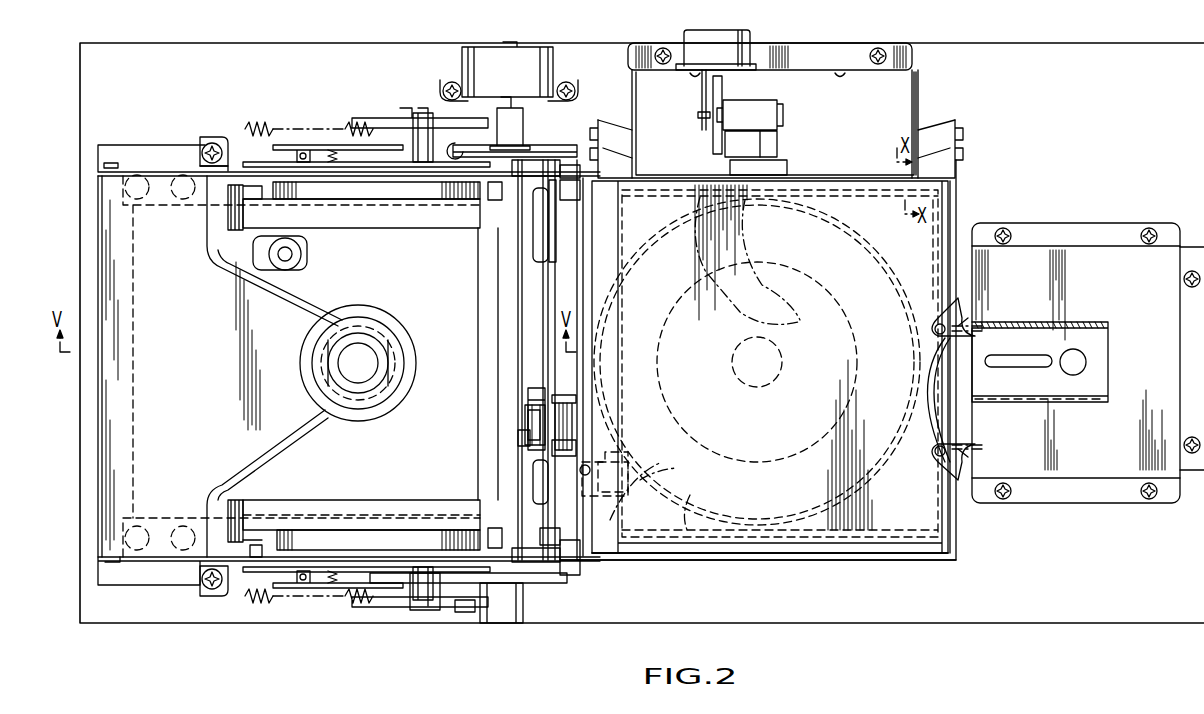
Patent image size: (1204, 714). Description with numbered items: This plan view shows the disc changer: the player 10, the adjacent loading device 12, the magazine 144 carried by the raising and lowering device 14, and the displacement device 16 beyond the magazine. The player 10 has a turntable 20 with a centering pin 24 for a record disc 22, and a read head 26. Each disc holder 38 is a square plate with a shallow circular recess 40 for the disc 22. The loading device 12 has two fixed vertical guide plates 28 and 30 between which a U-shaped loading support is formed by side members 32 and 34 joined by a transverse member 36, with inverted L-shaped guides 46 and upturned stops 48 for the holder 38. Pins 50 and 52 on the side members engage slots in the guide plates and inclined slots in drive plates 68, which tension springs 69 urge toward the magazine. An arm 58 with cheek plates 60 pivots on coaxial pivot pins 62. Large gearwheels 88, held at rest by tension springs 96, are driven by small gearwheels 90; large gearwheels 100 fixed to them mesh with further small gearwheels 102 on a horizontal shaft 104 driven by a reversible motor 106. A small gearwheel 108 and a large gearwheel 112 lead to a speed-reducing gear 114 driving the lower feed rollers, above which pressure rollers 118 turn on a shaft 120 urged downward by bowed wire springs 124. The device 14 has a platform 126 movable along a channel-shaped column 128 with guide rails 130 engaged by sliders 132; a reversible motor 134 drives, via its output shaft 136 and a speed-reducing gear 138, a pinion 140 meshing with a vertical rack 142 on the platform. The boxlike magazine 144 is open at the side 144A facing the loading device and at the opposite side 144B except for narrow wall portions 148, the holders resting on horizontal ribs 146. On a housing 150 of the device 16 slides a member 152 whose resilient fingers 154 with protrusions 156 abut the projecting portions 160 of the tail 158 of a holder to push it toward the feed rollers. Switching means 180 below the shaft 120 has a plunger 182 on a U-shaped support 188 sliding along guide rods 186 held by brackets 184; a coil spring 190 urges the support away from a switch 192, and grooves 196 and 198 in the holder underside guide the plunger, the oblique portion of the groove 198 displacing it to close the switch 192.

The player 10 is at (438, 299).
The loading device 12 is at (349, 114).
The magazine raising and lowering device 14 is at (850, 42).
The initial displacement device 16 is at (1113, 208).
The turntable 20 is at (402, 347).
The record disc 22 is at (610, 366).
The centering pin 24 is at (390, 327).
The read head 26 is at (307, 251).
The guide plate 28 is at (178, 562).
The guide plate 30 is at (183, 168).
The side member 32 is at (383, 500).
The side member 34 is at (402, 216).
The transverse member 36 is at (549, 322).
The disc holder 38 is at (608, 548).
The circular recess 40 is at (606, 300).
The guide 46 is at (446, 200).
The stop 48 is at (241, 505).
The pin 50 is at (250, 179).
The pin 52 is at (495, 184).
The arm 58 is at (303, 439).
The cheek plate 60 is at (162, 204).
The pivot pin 62 is at (118, 166).
The drive plate 68 is at (275, 128).
The tension spring 69 is at (335, 150).
The large gearwheel 88 is at (302, 144).
The small gearwheel 90 is at (447, 118).
The tension spring 96 is at (251, 125).
The large gearwheel 100 is at (387, 119).
The further small gearwheel 102 is at (523, 120).
The horizontal shaft 104 is at (478, 363).
The reversible electric motor 106 is at (546, 68).
The small gearwheel 108 is at (522, 612).
The large gearwheel 112 is at (547, 150).
The speed-reducing gear 114 is at (580, 190).
The pressure roller 118 is at (540, 262).
The shaft 120 is at (556, 220).
The bowed wire spring 124 is at (580, 176).
The platform 126 is at (853, 555).
The column 128 is at (918, 91).
The guide rail 130 is at (957, 135).
The slider 132 is at (607, 127).
The reversible electric motor 134 is at (725, 35).
The output shaft 136 is at (714, 75).
The speed-reducing gear 138 is at (710, 150).
The toothed pinion 140 is at (742, 137).
The toothed rack 142 is at (730, 152).
The magazine 144 is at (925, 558).
The open side 144A is at (604, 483).
The opposite open side 144B is at (947, 232).
The horizontal rib 146 is at (668, 222).
The narrow wall portion 148 is at (950, 196).
The housing 150 is at (1127, 258).
The member 152 is at (1100, 370).
The resilient finger 154 is at (980, 326).
The protrusion 156 is at (987, 364).
The tail 158 is at (925, 376).
The projecting portion 160 is at (927, 334).
The switching means 180 is at (576, 421).
The plunger 182 is at (621, 493).
The bracket 184 is at (535, 388).
The guide rod 186 is at (525, 410).
The U-shaped support 188 is at (563, 448).
The coil spring 190 is at (518, 438).
The switch 192 is at (528, 425).
The second groove 196 is at (645, 470).
The groove 198 is at (668, 469).